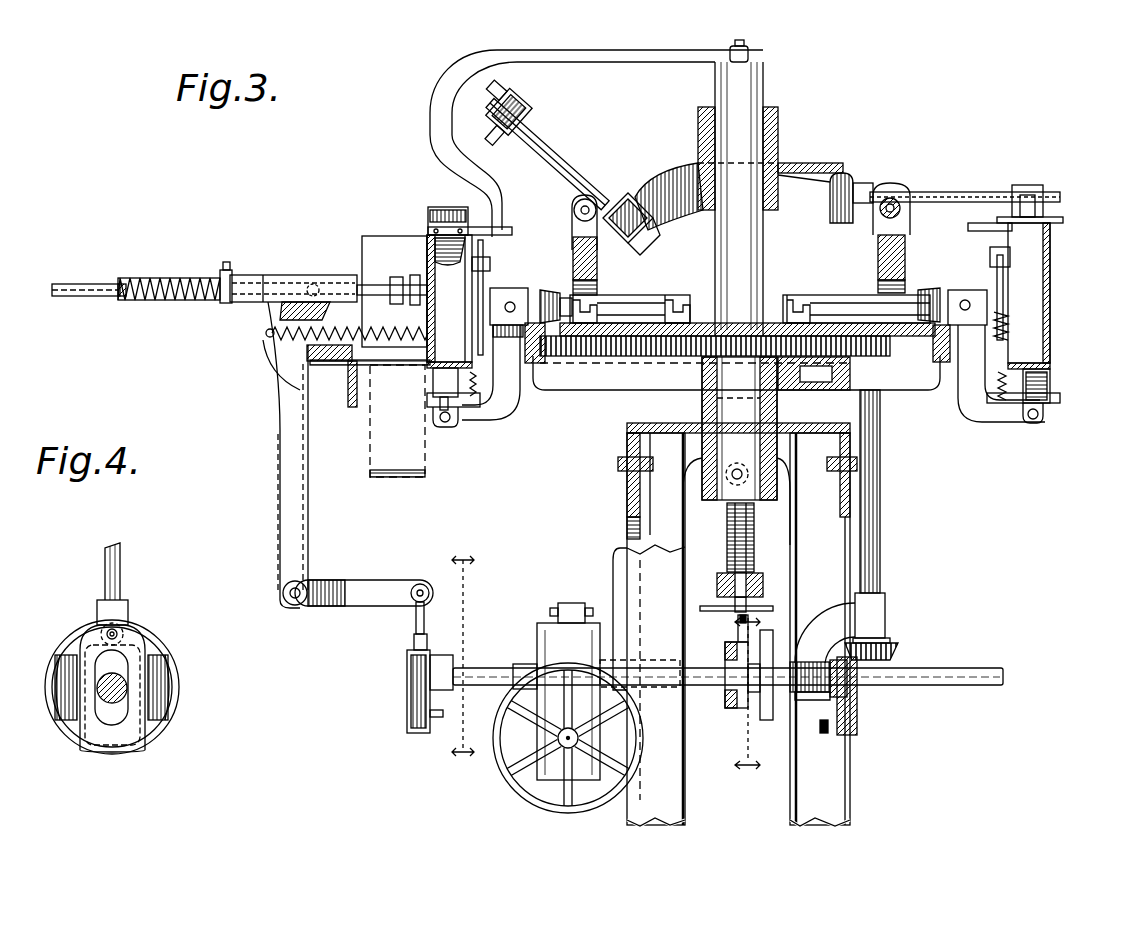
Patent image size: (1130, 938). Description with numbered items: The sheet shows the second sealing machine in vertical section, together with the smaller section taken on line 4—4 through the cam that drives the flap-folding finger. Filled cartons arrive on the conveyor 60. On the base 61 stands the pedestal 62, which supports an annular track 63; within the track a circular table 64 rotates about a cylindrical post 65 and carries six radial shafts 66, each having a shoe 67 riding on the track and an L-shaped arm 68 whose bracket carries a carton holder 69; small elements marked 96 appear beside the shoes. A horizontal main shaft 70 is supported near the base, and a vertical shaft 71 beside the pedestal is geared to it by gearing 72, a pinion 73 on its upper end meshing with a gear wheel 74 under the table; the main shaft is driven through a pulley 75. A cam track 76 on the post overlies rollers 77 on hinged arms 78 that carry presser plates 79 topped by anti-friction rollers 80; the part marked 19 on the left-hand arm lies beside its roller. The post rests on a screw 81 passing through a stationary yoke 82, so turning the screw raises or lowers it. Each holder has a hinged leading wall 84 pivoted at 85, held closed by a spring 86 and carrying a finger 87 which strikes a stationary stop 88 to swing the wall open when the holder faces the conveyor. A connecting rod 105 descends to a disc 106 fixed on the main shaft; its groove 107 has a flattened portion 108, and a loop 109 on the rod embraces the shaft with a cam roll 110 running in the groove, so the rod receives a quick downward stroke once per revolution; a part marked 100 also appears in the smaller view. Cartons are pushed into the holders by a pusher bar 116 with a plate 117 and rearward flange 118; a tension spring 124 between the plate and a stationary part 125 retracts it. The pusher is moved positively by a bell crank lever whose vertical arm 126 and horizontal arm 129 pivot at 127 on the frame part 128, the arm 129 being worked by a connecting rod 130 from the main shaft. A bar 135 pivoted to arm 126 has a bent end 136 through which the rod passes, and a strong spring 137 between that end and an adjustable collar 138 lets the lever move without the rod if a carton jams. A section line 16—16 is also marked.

In FIG. 3, the section line 4— 4 is at (757, 691).
In FIG. 3, the section line 16- 16 is at (462, 657).
In FIG. 3, the bracket arm 19 is at (495, 142).
In FIG. 3, the conveyor 60 is at (402, 366).
In FIG. 3, the base 61 is at (850, 552).
In FIG. 3, the pedestal 62 is at (700, 410).
In FIG. 3, the annular track 63 is at (515, 385).
In FIG. 3, the circular table 64 is at (660, 322).
In FIG. 3, the cylindrical post 65 is at (765, 262).
In FIG. 3, the radial shafts 66 is at (618, 296).
In FIG. 3, the shoe 67 is at (520, 290).
In FIG. 3, the L-shaped arm 68 is at (478, 425).
In FIG. 3, the carton holder 69 is at (1050, 386).
In FIG. 3, the horizontal main shaft 70 is at (910, 688).
In FIG. 4, the horizontal main shaft 70 is at (90, 750).
In FIG. 3, the vertical shaft 71 is at (882, 482).
In FIG. 3, the gearing 72 is at (870, 700).
In FIG. 3, the pinion 73 is at (890, 348).
In FIG. 3, the gear wheel 74 is at (814, 373).
In FIG. 3, the pulley 75 is at (512, 775).
In FIG. 3, the cam track 76 is at (800, 163).
In FIG. 3, the rollers 77 is at (622, 205).
In FIG. 3, the hinged arms 78 is at (555, 160).
In FIG. 3, the presser plates 79 is at (1058, 218).
In FIG. 3, the anti-friction rollers 80 is at (500, 102).
In FIG. 3, the screw 81 is at (755, 530).
In FIG. 3, the stationary bar or yoke 82 is at (760, 575).
In FIG. 3, the hinged side wall 84 is at (445, 226).
In FIG. 3, the hinged joint 85 is at (1005, 305).
In FIG. 3, the spring 86 is at (1010, 332).
In FIG. 3, the finger 87 is at (505, 232).
In FIG. 3, the stationary stop 88 is at (430, 160).
In FIG. 3, the bevel pinion 96 is at (550, 290).
In FIG. 4, the ball member 100 is at (155, 652).
In FIG. 3, the connecting rod 105 is at (738, 632).
In FIG. 4, the connecting rod 105 is at (122, 572).
In FIG. 3, the disc 106 is at (730, 702).
In FIG. 3, the continuous groove 107 is at (725, 655).
In FIG. 4, the continuous groove 107 is at (55, 728).
In FIG. 4, the flattened portion 108 is at (155, 680).
In FIG. 4, the loop 109 is at (135, 700).
In FIG. 4, the cam roll 110 is at (120, 634).
In FIG. 3, the pusher bar 116 is at (285, 278).
In FIG. 3, the plate 117 is at (427, 258).
In FIG. 3, the rearwardly-extending flange 118 is at (387, 246).
In FIG. 3, the tension spring 124 is at (285, 380).
In FIG. 3, the stationary part 125 is at (275, 345).
In FIG. 3, the vertical arm of bell crank lever 126 is at (266, 333).
In FIG. 3, the pivot of bell crank lever 127 is at (312, 580).
In FIG. 3, the stationary frame part 128 is at (280, 500).
In FIG. 3, the horizontal arm of bell crank lever 129 is at (372, 580).
In FIG. 3, the connecting rod 130 is at (426, 598).
In FIG. 3, the bar 135 is at (210, 300).
In FIG. 3, the bent end of bar 136 is at (110, 298).
In FIG. 3, the strong spring 137 is at (150, 300).
In FIG. 3, the collar 138 is at (232, 272).